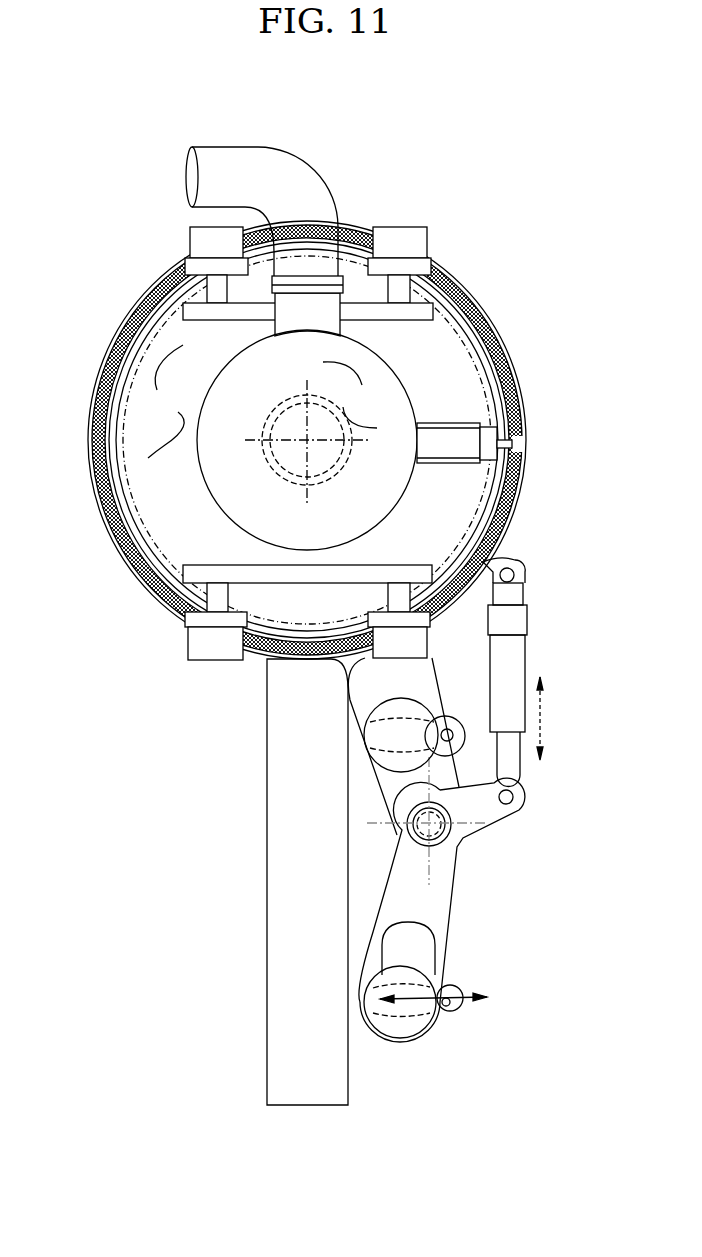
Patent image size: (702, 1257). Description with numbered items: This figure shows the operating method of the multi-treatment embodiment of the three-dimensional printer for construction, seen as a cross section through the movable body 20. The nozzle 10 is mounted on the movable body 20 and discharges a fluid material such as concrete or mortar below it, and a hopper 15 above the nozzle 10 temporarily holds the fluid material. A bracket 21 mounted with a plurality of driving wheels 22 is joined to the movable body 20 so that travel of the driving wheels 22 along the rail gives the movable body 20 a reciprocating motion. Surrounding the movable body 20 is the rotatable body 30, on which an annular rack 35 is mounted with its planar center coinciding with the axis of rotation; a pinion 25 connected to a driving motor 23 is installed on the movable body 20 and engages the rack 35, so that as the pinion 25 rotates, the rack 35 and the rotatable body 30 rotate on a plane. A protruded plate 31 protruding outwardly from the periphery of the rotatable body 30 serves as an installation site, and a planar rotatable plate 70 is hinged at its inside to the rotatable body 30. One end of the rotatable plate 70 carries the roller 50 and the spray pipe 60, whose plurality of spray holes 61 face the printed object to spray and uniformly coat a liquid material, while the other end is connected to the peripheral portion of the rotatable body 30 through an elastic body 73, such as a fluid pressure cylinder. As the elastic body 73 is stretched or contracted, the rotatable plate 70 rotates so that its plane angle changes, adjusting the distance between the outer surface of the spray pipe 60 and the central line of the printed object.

The nozzle 10 is at (317, 453).
The hopper 15 is at (350, 395).
The movable body 20 is at (166, 401).
The bracket 21 is at (190, 567).
The driving wheels 22 is at (190, 645).
The driving motor 23 is at (493, 430).
The pinion 25 is at (527, 443).
The rotatable body 30 is at (88, 472).
The protruded plate 31 is at (420, 680).
The annular rack 35 is at (527, 487).
The roller 50 is at (450, 725).
The spray pipe 60 is at (450, 1017).
The spray holes 61 is at (410, 1038).
The rotatable plate 70 is at (447, 897).
The elastic body 73 is at (522, 618).